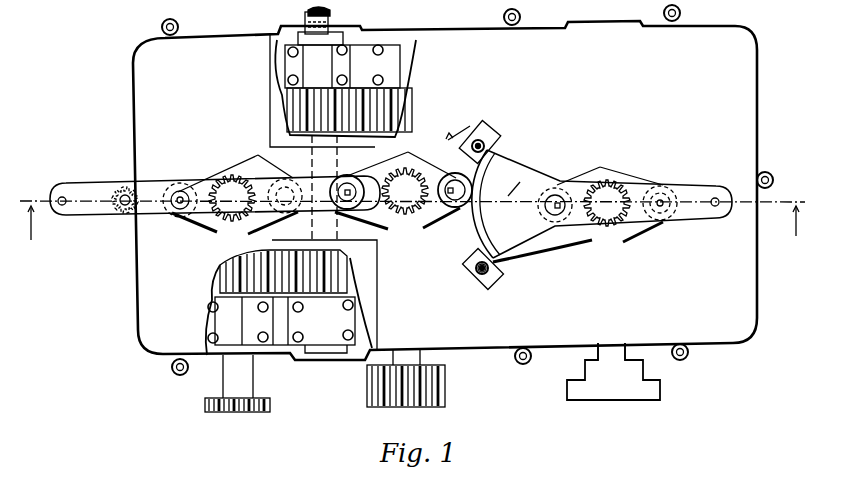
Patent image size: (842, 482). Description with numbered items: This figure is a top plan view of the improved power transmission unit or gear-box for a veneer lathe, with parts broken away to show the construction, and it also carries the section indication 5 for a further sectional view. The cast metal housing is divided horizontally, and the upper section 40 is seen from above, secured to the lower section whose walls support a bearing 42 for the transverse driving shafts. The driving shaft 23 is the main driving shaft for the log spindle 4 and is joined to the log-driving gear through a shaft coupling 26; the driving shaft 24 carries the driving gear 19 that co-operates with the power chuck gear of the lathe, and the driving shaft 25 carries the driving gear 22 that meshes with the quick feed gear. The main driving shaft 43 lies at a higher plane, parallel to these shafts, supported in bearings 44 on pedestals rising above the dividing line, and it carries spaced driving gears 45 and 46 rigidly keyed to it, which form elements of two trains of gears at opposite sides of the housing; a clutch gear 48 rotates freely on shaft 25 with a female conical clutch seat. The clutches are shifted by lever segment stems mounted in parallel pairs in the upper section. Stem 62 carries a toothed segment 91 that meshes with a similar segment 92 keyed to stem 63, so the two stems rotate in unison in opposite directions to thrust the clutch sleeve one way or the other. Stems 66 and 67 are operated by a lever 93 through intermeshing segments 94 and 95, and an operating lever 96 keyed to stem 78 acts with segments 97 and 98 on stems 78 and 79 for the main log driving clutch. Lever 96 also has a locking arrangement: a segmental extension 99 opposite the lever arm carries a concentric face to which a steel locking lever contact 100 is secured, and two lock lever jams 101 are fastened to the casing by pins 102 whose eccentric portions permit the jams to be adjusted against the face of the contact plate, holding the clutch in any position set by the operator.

The upper section of housing 40 is at (453, 190).
The log spindle 4 is at (413, 212).
The section line 5- 5 is at (483, 156).
The driving gear 19 is at (447, 388).
The driving gear 22 is at (243, 413).
The driving shaft 23 is at (613, 349).
The driving shaft 24 is at (413, 357).
The driving shaft 25 is at (222, 386).
The shaft coupling 26 is at (626, 401).
The bearing 42 is at (213, 323).
The main driving shaft 43 is at (306, 21).
The bearings 44 is at (312, 194).
The driving gear 45 is at (290, 116).
The driving gear 46 is at (335, 279).
The clutch gear 48 is at (232, 277).
The lever segment stem 62 is at (180, 185).
The lever segment stem 63 is at (288, 181).
The lever segment stem 66 is at (347, 176).
The lever segment stem 67 is at (458, 201).
The lever segment stem 78 is at (553, 191).
The lever segment stem 79 is at (662, 189).
The toothed segment 91 is at (212, 163).
The toothed segment 92 is at (258, 161).
The operating lever 93 is at (200, 226).
The segment 94 is at (398, 161).
The segment 95 is at (432, 159).
The operating lever 96 is at (700, 191).
The segment 97 is at (592, 183).
The segment 98 is at (615, 171).
The segmental extension 99 is at (602, 204).
The locking lever contact 100 is at (478, 237).
The lock lever jams 101 is at (486, 131).
The pins 102 is at (472, 273).